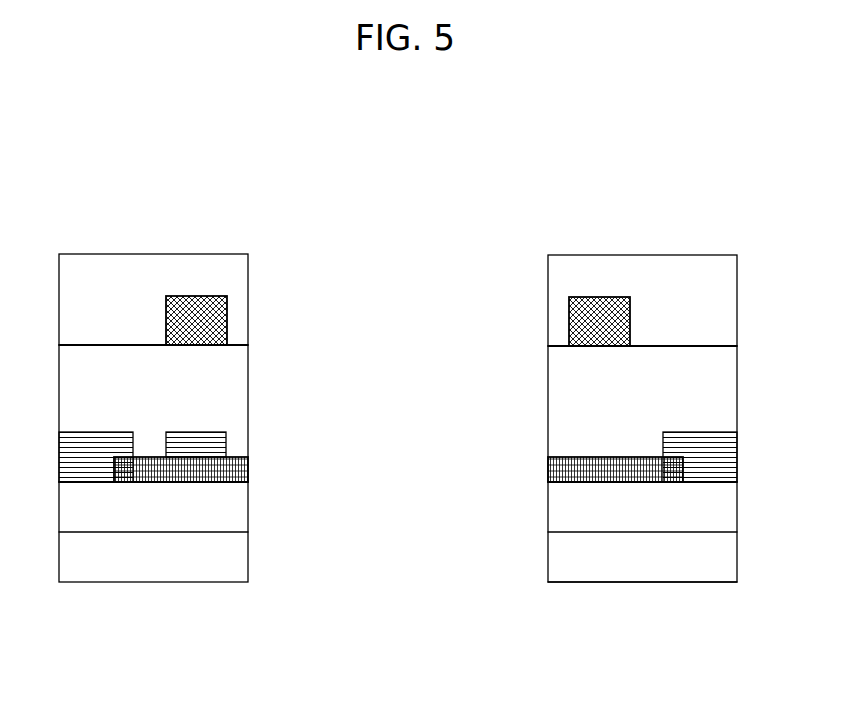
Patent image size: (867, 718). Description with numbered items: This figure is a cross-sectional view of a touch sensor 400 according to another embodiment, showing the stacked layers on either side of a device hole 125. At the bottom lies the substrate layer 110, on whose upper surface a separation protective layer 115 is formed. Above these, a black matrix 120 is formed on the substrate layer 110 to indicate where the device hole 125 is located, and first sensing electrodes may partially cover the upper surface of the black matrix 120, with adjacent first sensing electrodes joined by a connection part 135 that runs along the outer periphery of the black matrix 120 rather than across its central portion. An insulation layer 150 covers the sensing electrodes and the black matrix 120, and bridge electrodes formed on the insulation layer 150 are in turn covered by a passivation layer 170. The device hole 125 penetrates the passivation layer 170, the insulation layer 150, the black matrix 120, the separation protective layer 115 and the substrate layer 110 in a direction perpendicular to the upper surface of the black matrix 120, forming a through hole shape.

The touch sensor 400 is at (98, 158).
The substrate layer 110 is at (727, 555).
The separation protective layer 115 is at (727, 503).
The black matrix 120 is at (618, 470).
The device hole 125 is at (547, 322).
The connection part 135 is at (194, 447).
The insulation layer 150 is at (727, 387).
The passivation layer 170 is at (727, 307).